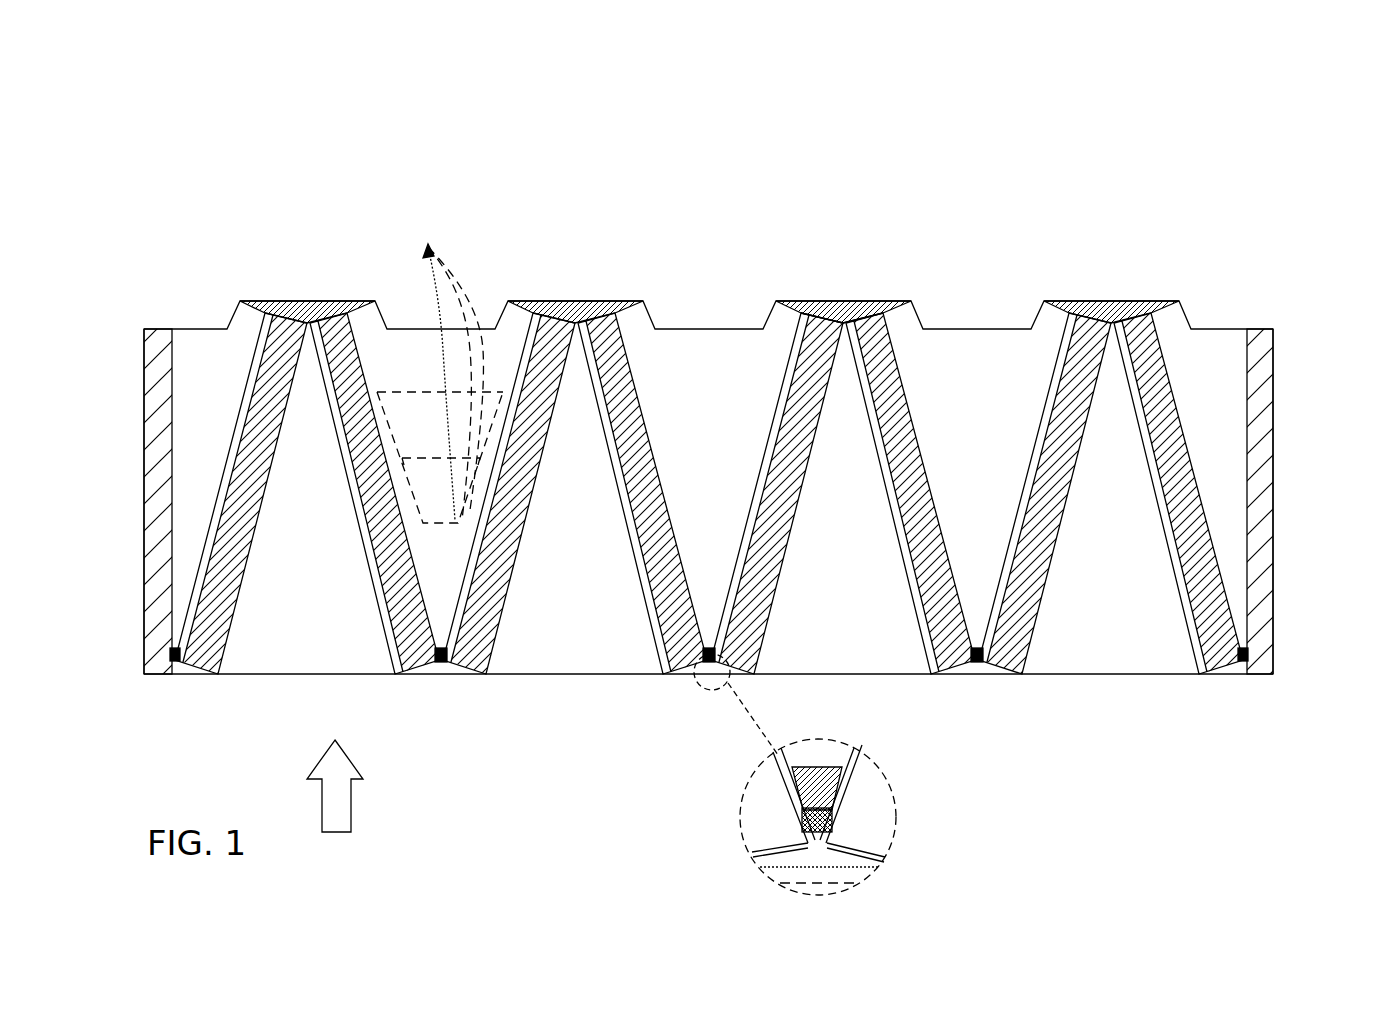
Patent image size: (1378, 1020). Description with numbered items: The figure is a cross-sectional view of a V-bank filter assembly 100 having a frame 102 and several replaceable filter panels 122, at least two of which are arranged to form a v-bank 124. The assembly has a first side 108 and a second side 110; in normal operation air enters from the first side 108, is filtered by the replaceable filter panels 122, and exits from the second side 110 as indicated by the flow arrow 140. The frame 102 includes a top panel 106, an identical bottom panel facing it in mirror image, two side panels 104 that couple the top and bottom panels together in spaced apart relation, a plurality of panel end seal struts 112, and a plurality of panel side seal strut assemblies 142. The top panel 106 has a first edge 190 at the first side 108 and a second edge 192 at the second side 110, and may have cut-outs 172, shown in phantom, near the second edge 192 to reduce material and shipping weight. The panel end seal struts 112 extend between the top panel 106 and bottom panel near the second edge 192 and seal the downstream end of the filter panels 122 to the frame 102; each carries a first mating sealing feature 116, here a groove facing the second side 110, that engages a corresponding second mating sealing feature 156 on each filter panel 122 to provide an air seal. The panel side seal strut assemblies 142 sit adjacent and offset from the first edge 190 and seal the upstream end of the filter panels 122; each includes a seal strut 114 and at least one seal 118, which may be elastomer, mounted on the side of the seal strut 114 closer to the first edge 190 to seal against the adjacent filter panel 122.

The V-bank filter assembly 100 is at (297, 93).
The frame 102 is at (144, 398).
The side panels 104 is at (146, 540).
The top panel 106 is at (195, 372).
The first side 108 is at (548, 678).
The second side 110 is at (545, 298).
The panel end seal struts 112 is at (842, 300).
The seal strut 114 is at (711, 648).
The first mating sealing feature 116 is at (857, 300).
The seal 118 is at (838, 822).
The replaceable filter panels 122 is at (655, 445).
The v-bank 124 is at (887, 503).
The flow arrow 140 is at (352, 805).
The panel side seal strut assemblies 142 is at (169, 652).
The second mating sealing feature 156 is at (908, 300).
The cut-outs 172 is at (440, 366).
The first edge 190 is at (290, 678).
The second edge 192 is at (301, 298).